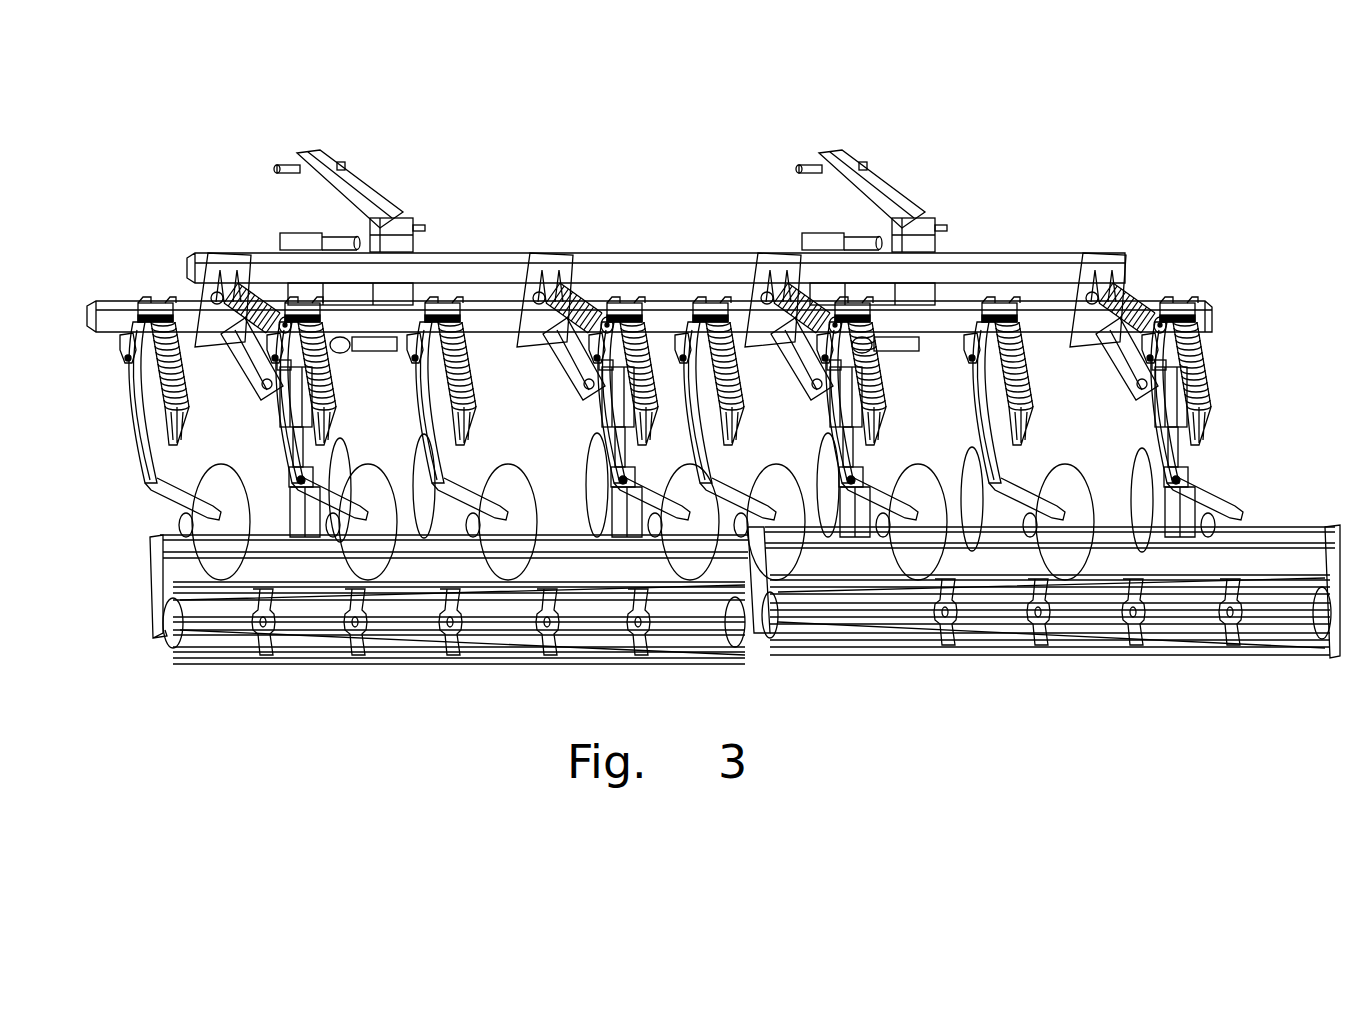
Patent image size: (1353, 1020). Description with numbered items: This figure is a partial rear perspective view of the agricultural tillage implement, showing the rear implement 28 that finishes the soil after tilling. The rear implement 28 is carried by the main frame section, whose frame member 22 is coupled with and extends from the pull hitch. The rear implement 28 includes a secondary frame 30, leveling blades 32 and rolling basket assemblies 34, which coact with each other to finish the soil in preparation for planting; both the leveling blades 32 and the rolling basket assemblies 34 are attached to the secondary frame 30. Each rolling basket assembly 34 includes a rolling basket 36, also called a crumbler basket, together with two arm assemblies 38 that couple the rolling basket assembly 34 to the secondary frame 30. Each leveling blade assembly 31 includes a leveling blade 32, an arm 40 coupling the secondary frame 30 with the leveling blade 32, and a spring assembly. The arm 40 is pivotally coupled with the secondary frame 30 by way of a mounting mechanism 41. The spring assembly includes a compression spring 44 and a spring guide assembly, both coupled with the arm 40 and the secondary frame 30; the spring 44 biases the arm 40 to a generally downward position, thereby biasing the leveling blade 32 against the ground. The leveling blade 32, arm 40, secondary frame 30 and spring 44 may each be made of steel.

The rear implement 28 is at (626, 192).
The frame member 22 is at (882, 192).
The secondary frame 30 is at (178, 297).
The leveling blade assembly 31 is at (125, 484).
The leveling blade 32 is at (152, 520).
The rolling basket assembly 34 is at (1253, 463).
The rolling basket 36 is at (960, 650).
The arm assembly 38 is at (1117, 398).
The arm 40 is at (157, 448).
The mounting mechanism 41 is at (120, 343).
The spring 44 is at (183, 380).